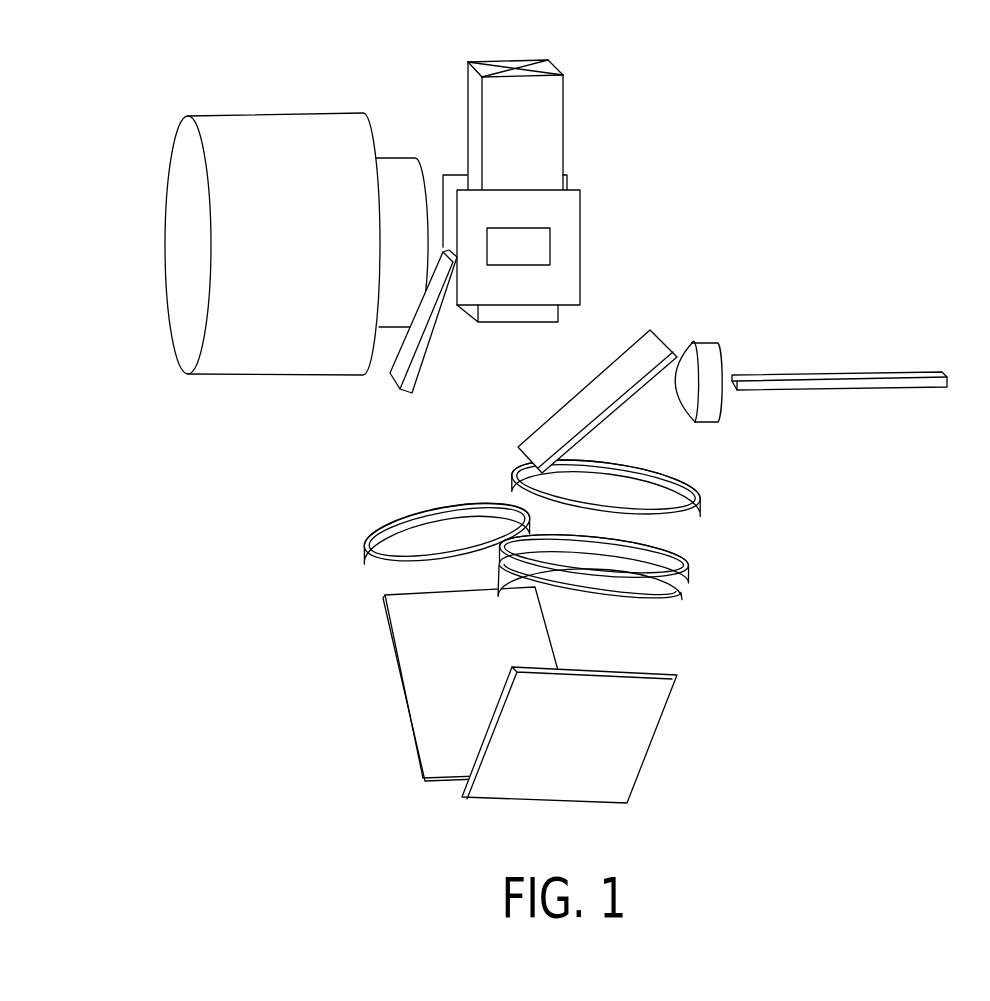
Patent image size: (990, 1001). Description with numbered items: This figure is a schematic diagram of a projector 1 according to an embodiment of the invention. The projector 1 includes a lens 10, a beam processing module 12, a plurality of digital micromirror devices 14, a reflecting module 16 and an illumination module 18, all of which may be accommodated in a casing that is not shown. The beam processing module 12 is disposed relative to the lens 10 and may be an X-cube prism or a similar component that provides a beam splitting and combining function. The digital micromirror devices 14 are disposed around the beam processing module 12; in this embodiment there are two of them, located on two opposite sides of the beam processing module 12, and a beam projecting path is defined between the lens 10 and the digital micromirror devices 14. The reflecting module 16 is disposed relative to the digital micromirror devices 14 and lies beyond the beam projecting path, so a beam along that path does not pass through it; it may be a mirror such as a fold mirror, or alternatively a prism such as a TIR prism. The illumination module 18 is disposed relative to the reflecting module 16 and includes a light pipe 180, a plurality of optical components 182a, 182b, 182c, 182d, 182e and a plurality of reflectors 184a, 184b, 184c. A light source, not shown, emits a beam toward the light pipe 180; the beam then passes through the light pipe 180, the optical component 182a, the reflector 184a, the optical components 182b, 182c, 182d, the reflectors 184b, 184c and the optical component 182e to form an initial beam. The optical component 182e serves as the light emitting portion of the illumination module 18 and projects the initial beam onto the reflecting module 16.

The projector 1 is at (840, 98).
The lens 10 is at (220, 114).
The beam processing module 12 is at (492, 60).
The digital micromirror device 14 is at (580, 245).
The reflecting module 16 is at (398, 388).
The illumination module 18 is at (763, 350).
The light pipe 180 is at (867, 388).
The optical component 182a is at (703, 421).
The optical component 182b is at (700, 510).
The optical component 182c is at (688, 577).
The optical component 182d is at (680, 605).
The optical component 182e is at (366, 558).
The reflector 184a is at (617, 358).
The reflector 184b is at (658, 727).
The reflector 184c is at (404, 685).